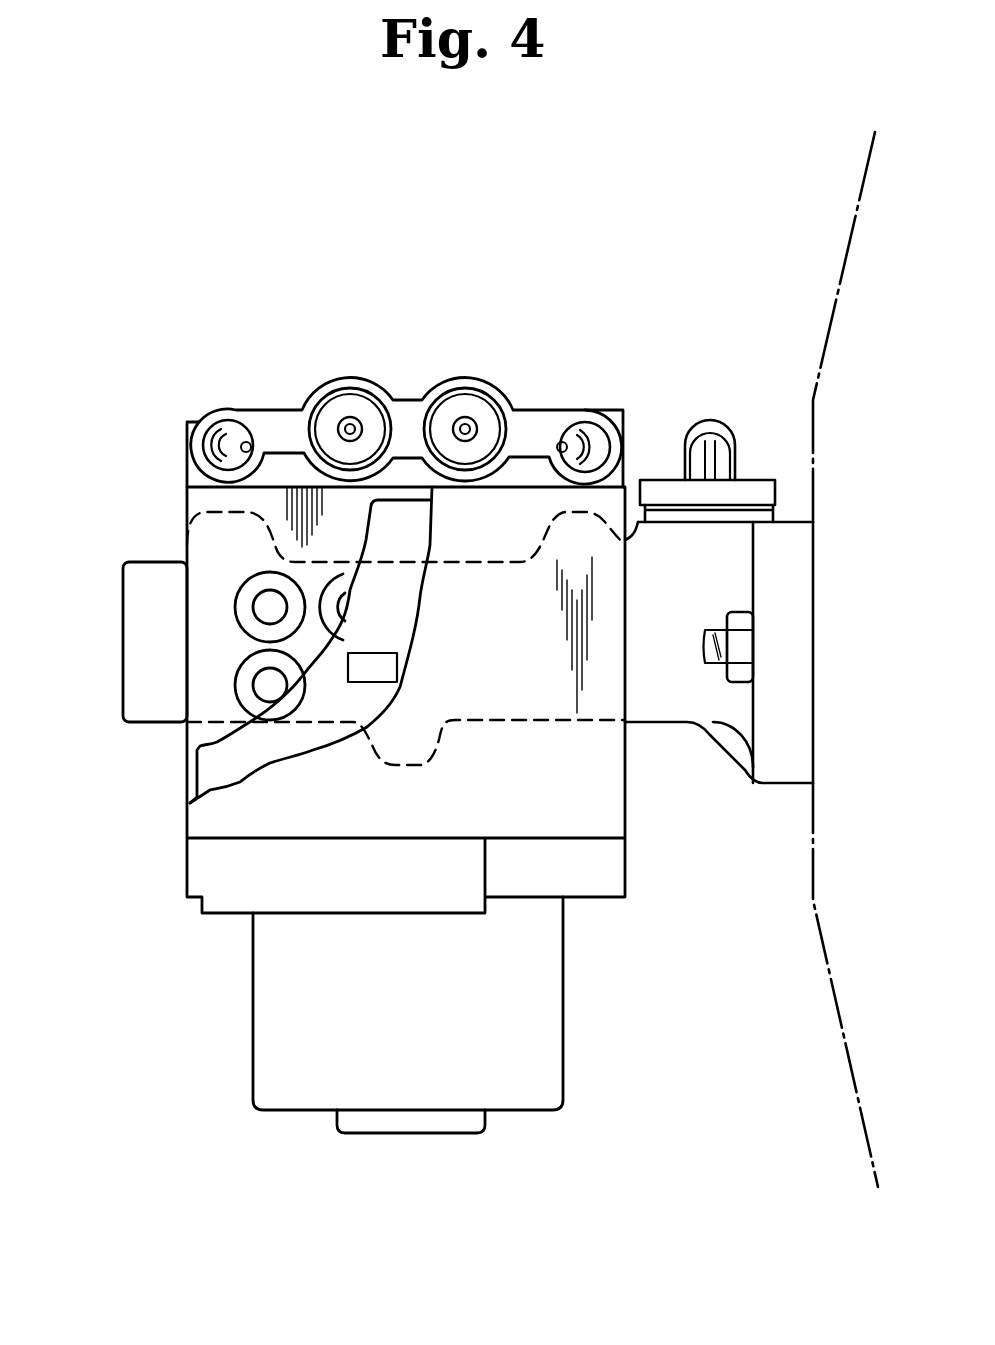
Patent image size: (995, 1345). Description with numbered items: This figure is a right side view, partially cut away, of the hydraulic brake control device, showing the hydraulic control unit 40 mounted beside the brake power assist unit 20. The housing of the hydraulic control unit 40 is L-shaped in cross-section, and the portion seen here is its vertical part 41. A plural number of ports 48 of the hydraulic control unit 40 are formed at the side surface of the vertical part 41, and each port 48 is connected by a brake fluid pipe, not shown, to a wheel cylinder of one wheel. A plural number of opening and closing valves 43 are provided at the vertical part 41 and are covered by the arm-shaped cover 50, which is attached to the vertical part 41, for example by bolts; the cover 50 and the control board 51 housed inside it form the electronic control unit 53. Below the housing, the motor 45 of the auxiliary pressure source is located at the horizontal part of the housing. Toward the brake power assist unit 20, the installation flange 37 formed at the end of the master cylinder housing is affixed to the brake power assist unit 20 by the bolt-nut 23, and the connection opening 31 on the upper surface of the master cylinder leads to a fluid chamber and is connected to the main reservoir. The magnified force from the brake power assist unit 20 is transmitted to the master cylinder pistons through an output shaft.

The brake power assist unit 20 is at (856, 219).
The bolt-nut 23 is at (745, 647).
The connection opening 31 is at (712, 417).
The installation flange 37 is at (800, 737).
The hydraulic control unit 40 is at (399, 707).
The vertical part 41 is at (197, 572).
The opening and closing valve 43 is at (237, 614).
The motor 45 is at (563, 1046).
The port 48 is at (469, 407).
The cover 50 is at (617, 800).
The control board 51 is at (202, 770).
The electronic control unit 53 is at (181, 805).